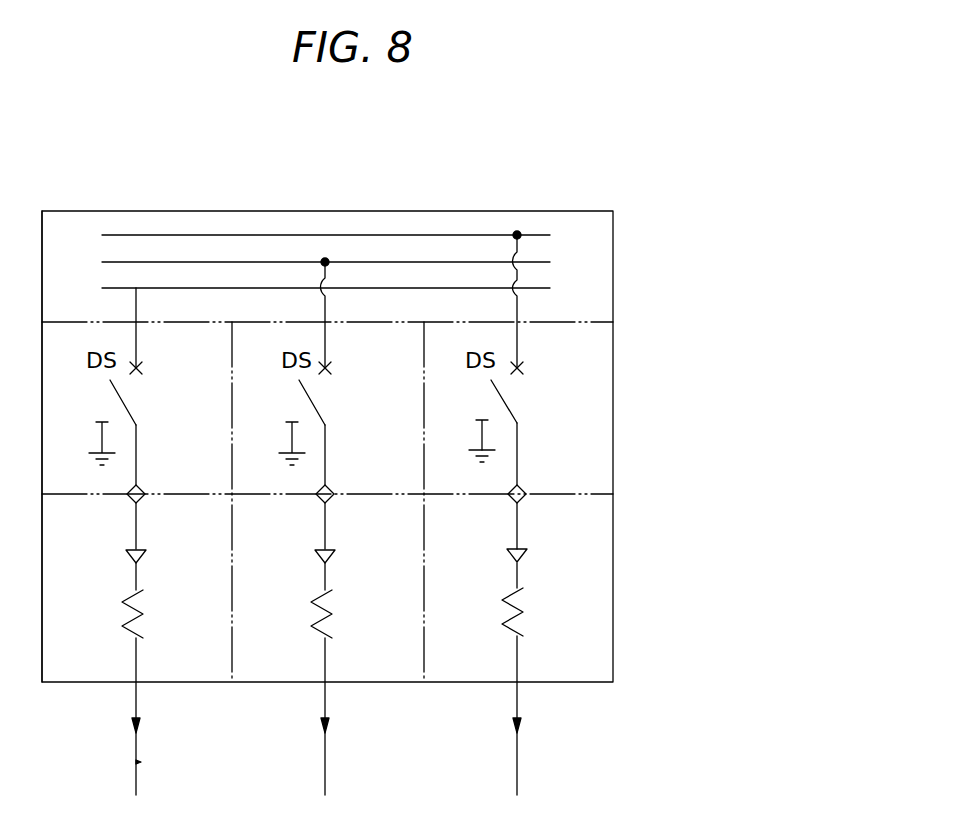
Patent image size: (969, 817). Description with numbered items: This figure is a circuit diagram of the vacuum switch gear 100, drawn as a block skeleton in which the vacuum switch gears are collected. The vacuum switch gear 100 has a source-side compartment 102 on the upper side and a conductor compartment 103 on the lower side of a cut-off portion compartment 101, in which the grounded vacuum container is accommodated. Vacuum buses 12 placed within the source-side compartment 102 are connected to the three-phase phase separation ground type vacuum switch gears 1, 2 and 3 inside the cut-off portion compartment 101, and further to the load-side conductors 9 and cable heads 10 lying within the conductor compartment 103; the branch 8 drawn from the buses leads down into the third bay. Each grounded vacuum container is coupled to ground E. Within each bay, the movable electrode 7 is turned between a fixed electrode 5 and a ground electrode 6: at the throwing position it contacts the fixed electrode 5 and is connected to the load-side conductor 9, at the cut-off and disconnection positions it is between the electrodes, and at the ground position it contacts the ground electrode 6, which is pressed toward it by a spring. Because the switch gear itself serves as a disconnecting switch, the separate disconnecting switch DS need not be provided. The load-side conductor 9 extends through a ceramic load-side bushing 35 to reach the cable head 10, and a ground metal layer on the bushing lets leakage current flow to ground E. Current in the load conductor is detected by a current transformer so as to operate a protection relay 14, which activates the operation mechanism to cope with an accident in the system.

The vacuum switch gear 100 is at (133, 179).
The vacuum buses 12 is at (480, 233).
The source-side compartment 102 is at (604, 243).
The branch conductor 8 is at (521, 300).
The cut-off portion compartment 101 is at (593, 337).
The vacuum switch gear 1 is at (53, 403).
The vacuum switch gear 2 is at (241, 402).
The vacuum switch gear 3 is at (433, 408).
The fixed electrode 5 is at (530, 370).
The movable electrode 7 is at (505, 397).
The ground electrode 6 is at (475, 425).
The ground E is at (468, 460).
The load-side conductor 9 is at (519, 450).
The load-side bushing 35 is at (333, 502).
The conductor compartment 103 is at (595, 516).
The cable head 10 is at (524, 553).
The protection relay 14 is at (526, 600).